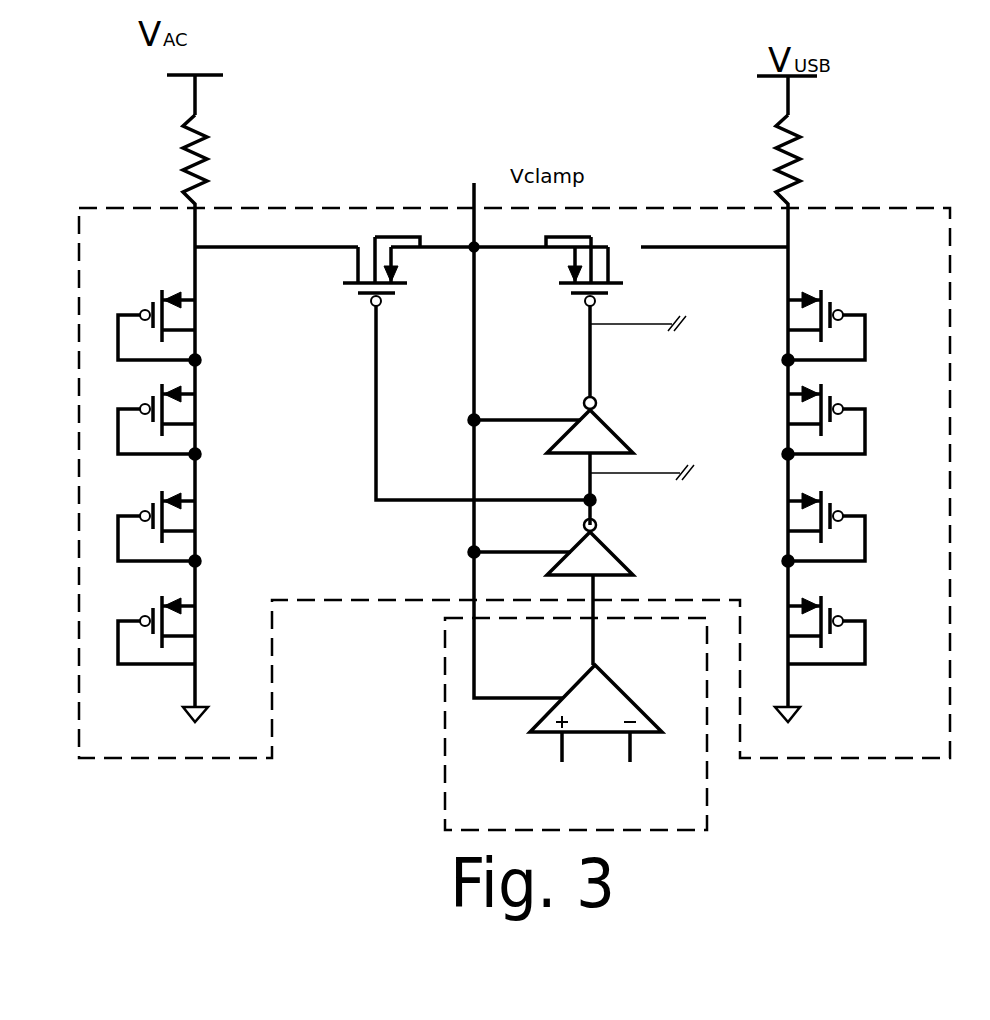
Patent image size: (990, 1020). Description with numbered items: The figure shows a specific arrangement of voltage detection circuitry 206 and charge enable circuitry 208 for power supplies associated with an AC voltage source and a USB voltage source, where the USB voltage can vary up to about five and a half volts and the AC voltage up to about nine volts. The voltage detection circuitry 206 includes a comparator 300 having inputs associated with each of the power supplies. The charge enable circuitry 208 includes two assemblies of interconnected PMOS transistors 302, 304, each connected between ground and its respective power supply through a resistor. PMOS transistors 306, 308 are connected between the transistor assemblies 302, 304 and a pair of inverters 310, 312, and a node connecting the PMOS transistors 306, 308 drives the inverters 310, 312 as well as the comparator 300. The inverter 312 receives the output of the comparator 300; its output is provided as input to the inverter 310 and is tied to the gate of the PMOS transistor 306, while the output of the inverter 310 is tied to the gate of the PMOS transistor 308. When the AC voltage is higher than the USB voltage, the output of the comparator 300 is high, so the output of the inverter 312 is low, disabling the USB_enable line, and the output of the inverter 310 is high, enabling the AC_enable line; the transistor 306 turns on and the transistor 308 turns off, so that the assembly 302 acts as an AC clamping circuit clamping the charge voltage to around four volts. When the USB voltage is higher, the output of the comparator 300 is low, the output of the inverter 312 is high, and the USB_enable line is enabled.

The charge enable circuitry 208 is at (113, 206).
The voltage detection circuitry 206 is at (445, 700).
The PMOS transistor assembly 302 is at (235, 317).
The PMOS transistor assembly 304 is at (758, 317).
The PMOS transistor 306 is at (392, 237).
The PMOS transistor 308 is at (578, 237).
The inverter 310 is at (580, 412).
The inverter 312 is at (580, 535).
The comparator 300 is at (595, 665).